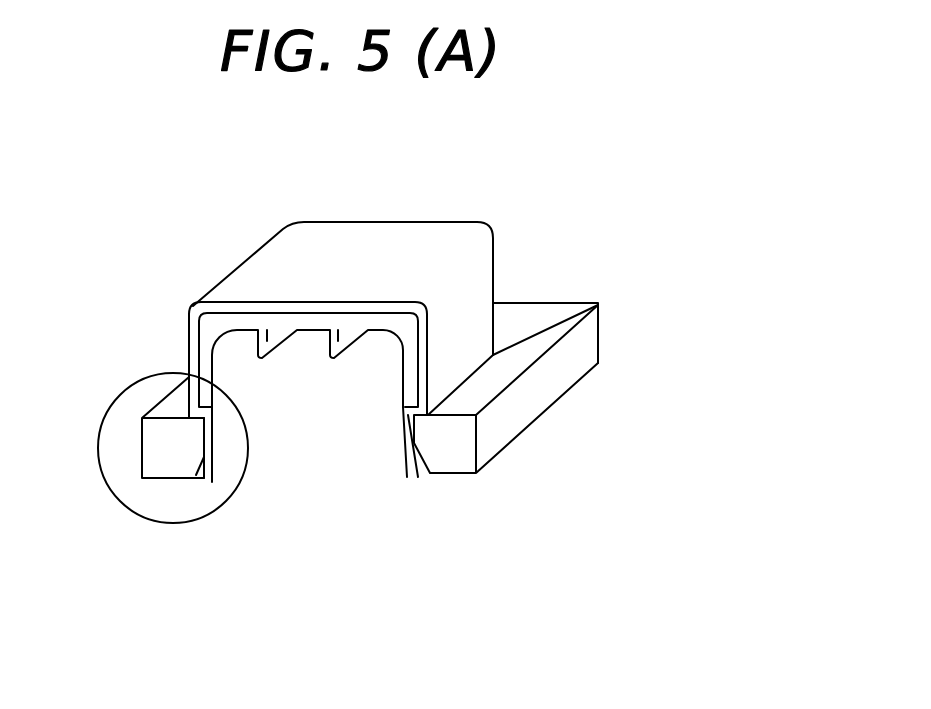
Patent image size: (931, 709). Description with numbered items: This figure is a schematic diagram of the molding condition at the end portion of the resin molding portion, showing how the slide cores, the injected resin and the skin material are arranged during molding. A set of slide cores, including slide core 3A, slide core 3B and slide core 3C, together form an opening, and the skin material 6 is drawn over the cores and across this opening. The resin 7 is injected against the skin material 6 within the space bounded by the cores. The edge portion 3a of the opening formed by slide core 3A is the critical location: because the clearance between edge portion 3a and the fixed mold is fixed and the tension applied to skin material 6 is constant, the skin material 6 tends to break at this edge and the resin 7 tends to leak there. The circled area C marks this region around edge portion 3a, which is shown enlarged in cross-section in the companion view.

The skin material 6 is at (245, 308).
The injected resin 7 is at (297, 322).
The slide core 3A is at (150, 444).
The edge portion 3a is at (200, 434).
The slide core 3B is at (522, 317).
The slide core 3C is at (512, 423).
The circled area C is at (228, 521).